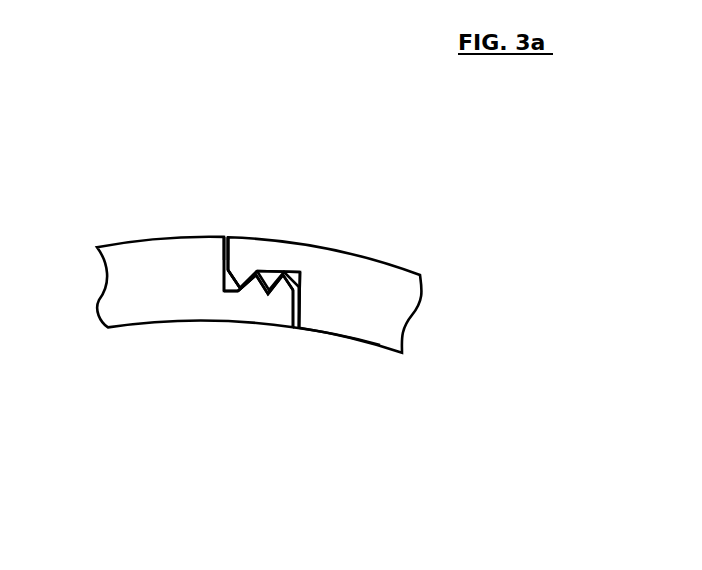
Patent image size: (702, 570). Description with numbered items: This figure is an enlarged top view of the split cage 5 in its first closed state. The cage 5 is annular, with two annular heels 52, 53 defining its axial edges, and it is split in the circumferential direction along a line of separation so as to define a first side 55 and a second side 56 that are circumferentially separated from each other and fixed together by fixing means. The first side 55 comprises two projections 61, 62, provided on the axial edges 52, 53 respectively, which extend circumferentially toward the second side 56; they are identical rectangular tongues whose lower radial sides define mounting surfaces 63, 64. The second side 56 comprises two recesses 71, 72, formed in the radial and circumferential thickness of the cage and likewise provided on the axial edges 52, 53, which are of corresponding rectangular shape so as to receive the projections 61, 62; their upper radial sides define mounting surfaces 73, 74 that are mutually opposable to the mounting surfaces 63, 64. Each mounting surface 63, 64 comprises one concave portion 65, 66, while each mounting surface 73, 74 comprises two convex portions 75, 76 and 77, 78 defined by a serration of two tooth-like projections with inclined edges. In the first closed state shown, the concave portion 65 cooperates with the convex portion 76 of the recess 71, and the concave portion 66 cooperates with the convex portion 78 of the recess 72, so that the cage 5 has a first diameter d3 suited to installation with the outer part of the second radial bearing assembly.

The cage 5 is at (444, 348).
The annular heel 52 is at (276, 268).
The annular heel 53 is at (117, 240).
The first side 55 is at (343, 241).
The second side 56 is at (196, 226).
The projection 61 is at (303, 225).
The projection 62 is at (274, 268).
The mounting surface 63 is at (361, 277).
The mounting surface 64 is at (304, 297).
The concave portion 65 is at (266, 228).
The concave portion 66 is at (231, 270).
The recess 71 is at (232, 212).
The recess 72 is at (240, 287).
The mounting surface 73 is at (179, 317).
The mounting surface 74 is at (236, 291).
The convex portion 75 is at (265, 324).
The convex portion 77 is at (275, 292).
The convex portion 76 is at (237, 338).
The convex portion 78 is at (230, 293).
The first diameter d3 is at (332, 343).